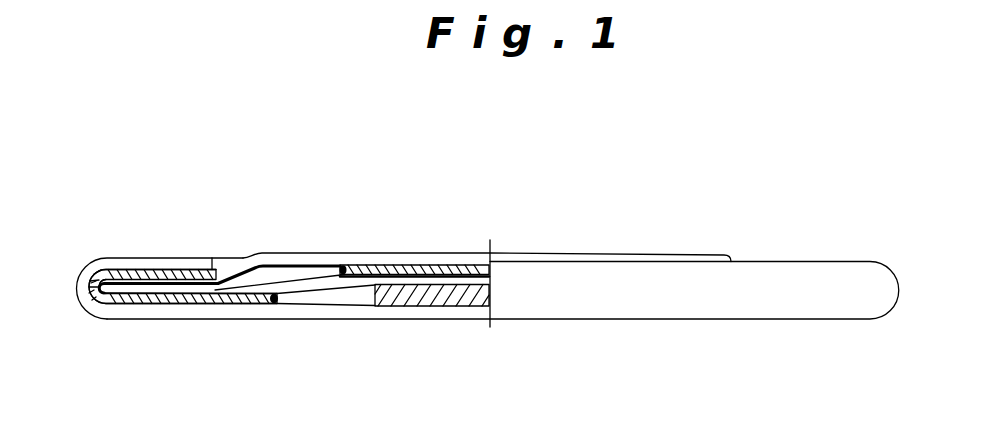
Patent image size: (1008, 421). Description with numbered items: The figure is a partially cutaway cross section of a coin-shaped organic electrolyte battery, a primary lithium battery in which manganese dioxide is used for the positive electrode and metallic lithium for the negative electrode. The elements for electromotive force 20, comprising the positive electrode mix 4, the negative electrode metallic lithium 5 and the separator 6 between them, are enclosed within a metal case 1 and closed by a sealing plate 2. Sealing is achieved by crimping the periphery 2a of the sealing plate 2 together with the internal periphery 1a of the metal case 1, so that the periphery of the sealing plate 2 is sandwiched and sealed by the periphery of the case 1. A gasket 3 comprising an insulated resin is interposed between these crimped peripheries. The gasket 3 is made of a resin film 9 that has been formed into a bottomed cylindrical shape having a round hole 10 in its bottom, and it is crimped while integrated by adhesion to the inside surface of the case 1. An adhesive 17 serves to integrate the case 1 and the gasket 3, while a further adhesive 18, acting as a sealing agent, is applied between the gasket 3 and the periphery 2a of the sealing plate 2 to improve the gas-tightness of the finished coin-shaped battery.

The metal case 1 is at (310, 319).
The internal periphery of metal case 1a is at (118, 258).
The sealing plate 2 is at (334, 253).
The periphery of sealing plate 2a is at (89, 304).
The gasket 3 is at (124, 304).
The resin film 9 is at (183, 287).
The positive electrode mix 4 is at (416, 297).
The negative electrode metallic lithium 5 is at (453, 265).
The separator 6 is at (289, 287).
The round hole 10 is at (277, 304).
The adhesive 17 is at (99, 304).
The adhesive (sealing agent) 18 is at (187, 269).
The elements for electromotive force 20 is at (480, 262).